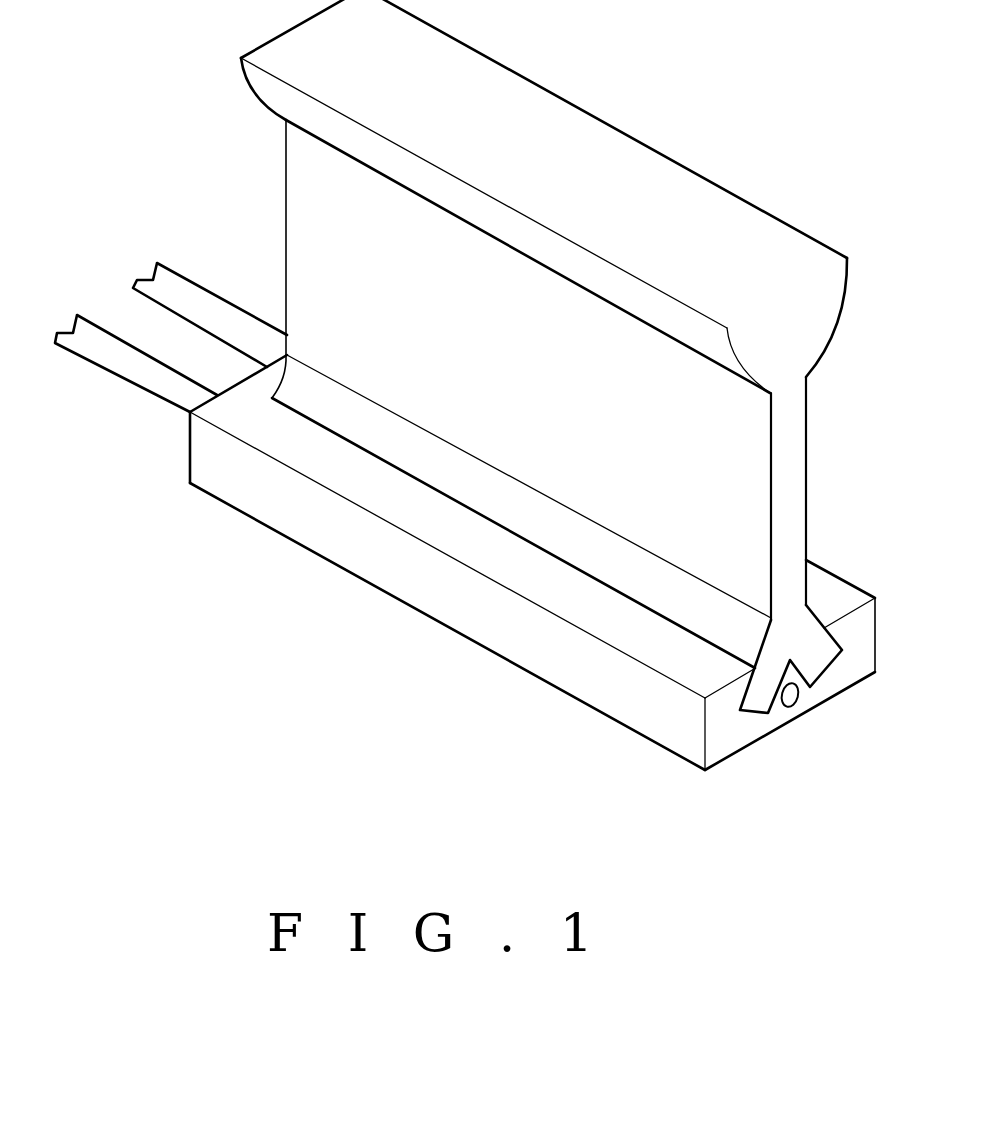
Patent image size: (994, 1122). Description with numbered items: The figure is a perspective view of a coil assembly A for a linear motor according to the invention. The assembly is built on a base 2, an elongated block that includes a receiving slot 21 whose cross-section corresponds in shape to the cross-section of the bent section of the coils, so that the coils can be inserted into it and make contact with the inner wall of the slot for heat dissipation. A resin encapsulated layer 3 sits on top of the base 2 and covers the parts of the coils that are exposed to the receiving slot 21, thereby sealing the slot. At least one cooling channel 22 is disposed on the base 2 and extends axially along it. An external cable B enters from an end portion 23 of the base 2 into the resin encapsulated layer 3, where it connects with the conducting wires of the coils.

The coil assembly A is at (544, 334).
The resin encapsulated layer 3 is at (665, 188).
The base 2 is at (533, 562).
The receiving slot 21 is at (748, 697).
The cooling channel 22 is at (792, 706).
The end portion 23 is at (853, 650).
The external cable B is at (107, 347).